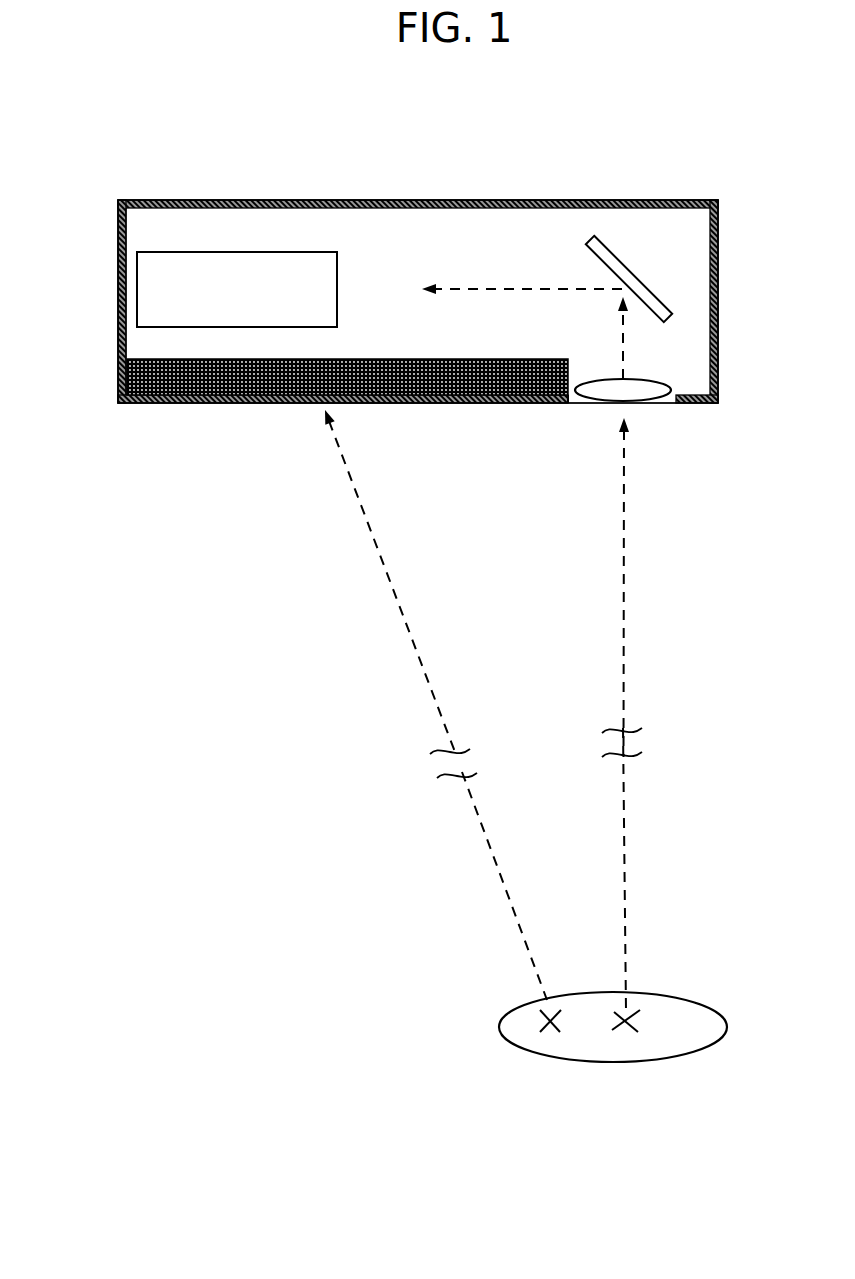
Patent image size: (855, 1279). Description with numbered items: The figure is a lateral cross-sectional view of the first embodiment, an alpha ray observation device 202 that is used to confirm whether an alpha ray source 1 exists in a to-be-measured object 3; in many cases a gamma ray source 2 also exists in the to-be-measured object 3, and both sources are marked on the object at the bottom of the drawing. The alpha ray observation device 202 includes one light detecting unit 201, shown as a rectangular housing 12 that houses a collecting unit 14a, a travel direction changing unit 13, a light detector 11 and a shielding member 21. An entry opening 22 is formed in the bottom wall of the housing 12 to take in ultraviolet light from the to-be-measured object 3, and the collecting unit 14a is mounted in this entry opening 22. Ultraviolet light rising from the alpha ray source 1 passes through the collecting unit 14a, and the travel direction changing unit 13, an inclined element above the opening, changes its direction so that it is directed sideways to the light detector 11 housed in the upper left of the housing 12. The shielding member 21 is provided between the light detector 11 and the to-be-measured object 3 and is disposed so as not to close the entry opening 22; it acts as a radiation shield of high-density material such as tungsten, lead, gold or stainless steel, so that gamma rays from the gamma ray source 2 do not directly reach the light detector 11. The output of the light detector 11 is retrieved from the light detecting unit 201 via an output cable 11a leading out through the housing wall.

The alpha ray source 1 is at (626, 1040).
The gamma ray source 2 is at (555, 1038).
The to-be-measured object 3 is at (497, 1028).
The light detector 11 is at (221, 252).
The output cable 11a is at (135, 292).
The housing 12 is at (305, 204).
The travel direction changing unit 13 is at (601, 240).
The collecting unit 14a is at (646, 400).
The shielding member 21 is at (173, 359).
The entry opening 22 is at (570, 403).
The light detecting unit 201 is at (172, 546).
The alpha ray observation device 202 is at (418, 301).